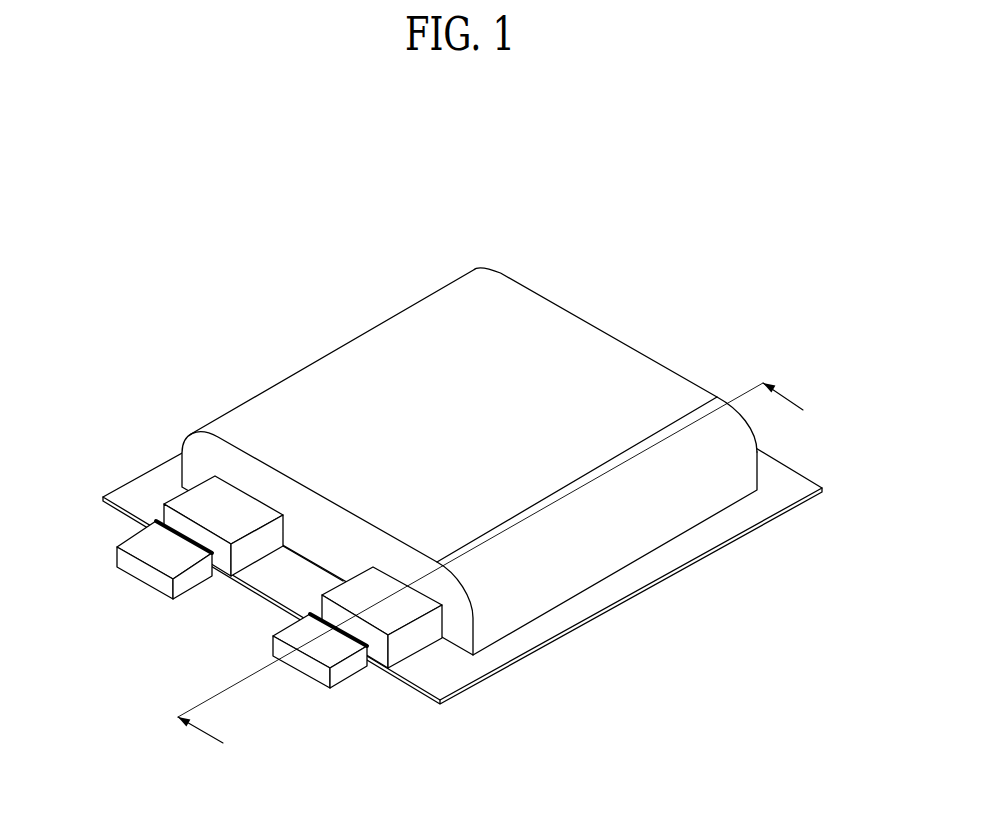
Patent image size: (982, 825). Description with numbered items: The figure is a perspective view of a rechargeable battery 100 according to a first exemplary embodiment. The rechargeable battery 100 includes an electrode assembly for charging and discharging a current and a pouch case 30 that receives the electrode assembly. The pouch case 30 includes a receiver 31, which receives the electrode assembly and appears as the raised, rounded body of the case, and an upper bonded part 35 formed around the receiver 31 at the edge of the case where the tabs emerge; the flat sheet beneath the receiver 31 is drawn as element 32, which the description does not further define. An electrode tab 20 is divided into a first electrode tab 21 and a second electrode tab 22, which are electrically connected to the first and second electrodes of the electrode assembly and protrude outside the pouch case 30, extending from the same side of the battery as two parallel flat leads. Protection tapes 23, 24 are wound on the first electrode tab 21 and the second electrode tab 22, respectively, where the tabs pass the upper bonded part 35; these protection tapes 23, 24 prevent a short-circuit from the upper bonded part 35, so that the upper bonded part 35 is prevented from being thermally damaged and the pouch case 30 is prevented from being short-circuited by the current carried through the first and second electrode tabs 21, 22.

The rechargeable battery 100 is at (443, 173).
The electrode tab 20 is at (270, 599).
The first electrode tab 21 is at (315, 662).
The second electrode tab 22 is at (140, 567).
The protection tape 23 is at (378, 660).
The protection tape 24 is at (222, 570).
The pouch case 30 is at (462, 476).
The receiver 31 is at (578, 350).
The lower plate 32 is at (640, 581).
The upper bonded part 35 is at (292, 583).